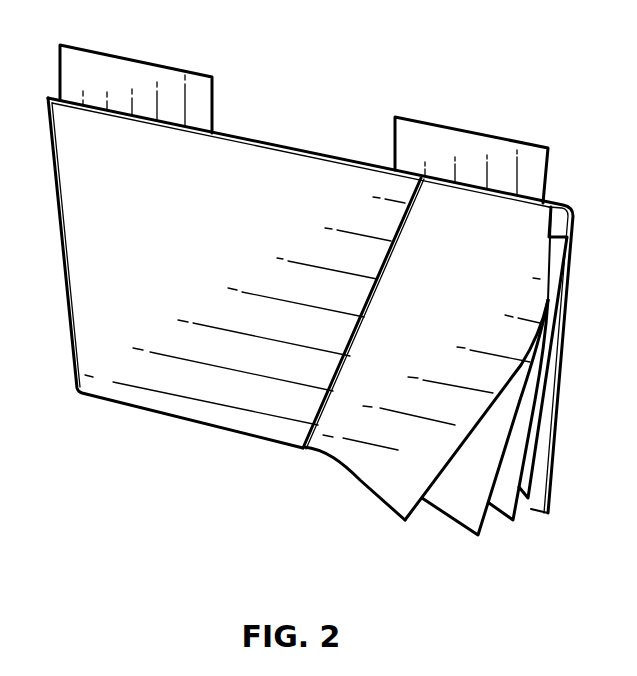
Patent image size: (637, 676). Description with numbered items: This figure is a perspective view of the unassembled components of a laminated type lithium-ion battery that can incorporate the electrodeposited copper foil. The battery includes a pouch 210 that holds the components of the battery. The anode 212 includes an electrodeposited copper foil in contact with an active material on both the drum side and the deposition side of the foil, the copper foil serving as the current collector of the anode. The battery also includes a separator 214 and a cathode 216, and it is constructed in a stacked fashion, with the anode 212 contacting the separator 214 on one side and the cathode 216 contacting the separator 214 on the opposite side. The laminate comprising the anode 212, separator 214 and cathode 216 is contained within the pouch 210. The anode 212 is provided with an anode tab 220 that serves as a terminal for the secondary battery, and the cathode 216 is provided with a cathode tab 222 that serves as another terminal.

The pouch 210 is at (116, 377).
The anode 212 is at (380, 458).
The separator 214 is at (467, 510).
The cathode 216 is at (507, 510).
The anode tab 220 is at (148, 78).
The cathode tab 222 is at (470, 150).